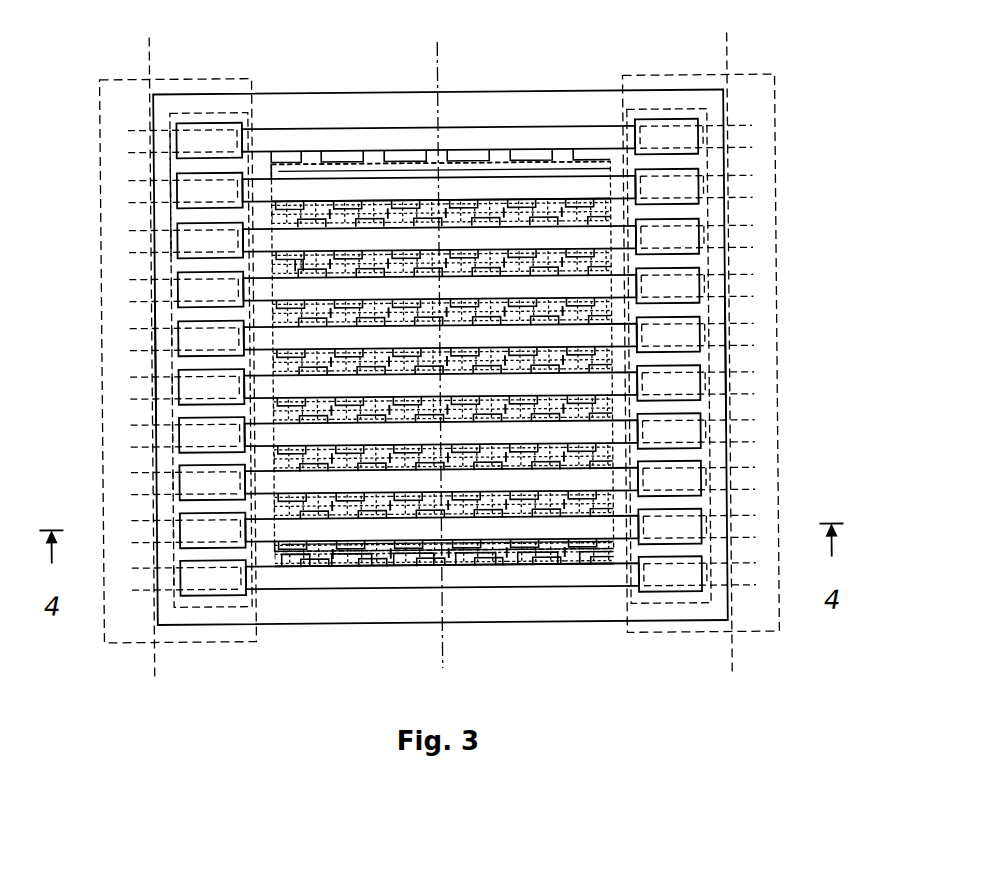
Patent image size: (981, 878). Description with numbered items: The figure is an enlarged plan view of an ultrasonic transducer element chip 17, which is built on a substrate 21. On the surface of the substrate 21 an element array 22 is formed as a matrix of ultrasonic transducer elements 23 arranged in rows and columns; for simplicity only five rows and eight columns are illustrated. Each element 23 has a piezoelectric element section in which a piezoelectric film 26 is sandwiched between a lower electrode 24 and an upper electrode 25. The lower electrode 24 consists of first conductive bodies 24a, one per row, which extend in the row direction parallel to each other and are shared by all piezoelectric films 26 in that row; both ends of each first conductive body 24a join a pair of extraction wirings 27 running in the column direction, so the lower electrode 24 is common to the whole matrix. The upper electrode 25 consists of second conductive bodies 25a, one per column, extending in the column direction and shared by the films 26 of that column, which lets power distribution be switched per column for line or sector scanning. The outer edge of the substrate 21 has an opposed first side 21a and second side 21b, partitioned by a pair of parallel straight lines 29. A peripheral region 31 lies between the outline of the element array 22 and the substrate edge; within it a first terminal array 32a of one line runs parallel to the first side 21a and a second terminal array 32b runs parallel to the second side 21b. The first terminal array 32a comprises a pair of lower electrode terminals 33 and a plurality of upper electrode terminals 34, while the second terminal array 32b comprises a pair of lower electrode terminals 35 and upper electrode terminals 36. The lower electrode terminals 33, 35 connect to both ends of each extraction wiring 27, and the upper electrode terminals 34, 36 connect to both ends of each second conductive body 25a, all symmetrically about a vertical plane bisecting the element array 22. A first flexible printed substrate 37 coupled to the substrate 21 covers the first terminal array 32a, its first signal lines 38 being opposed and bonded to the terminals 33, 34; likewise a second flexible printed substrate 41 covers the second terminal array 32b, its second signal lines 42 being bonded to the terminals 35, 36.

The element chip 17 is at (292, 76).
The substrate 21 is at (498, 96).
The first side 21a is at (152, 356).
The second side 21b is at (728, 355).
The element array 22 is at (275, 176).
The ultrasonic transducer element 23 is at (340, 163).
The lower electrode 24 is at (300, 262).
The first conductive body 24a is at (405, 178).
The upper electrode 25 is at (375, 190).
The second conductive body 25a is at (462, 198).
The piezoelectric film 26 is at (310, 155).
The extraction wiring 27 is at (548, 127).
The straight line 29 is at (152, 68).
The peripheral region 31 is at (225, 108).
The first terminal array 32a is at (168, 183).
The second terminal array 32b is at (730, 590).
The lower electrode terminal 33 is at (180, 130).
The upper electrode terminal 34 is at (180, 190).
The lower electrode terminal 35 is at (640, 128).
The upper electrode terminal 36 is at (700, 200).
The first flexible printed substrate 37 is at (127, 74).
The first signal line 38 is at (132, 200).
The second flexible printed substrate 41 is at (700, 74).
The second signal line 42 is at (752, 128).